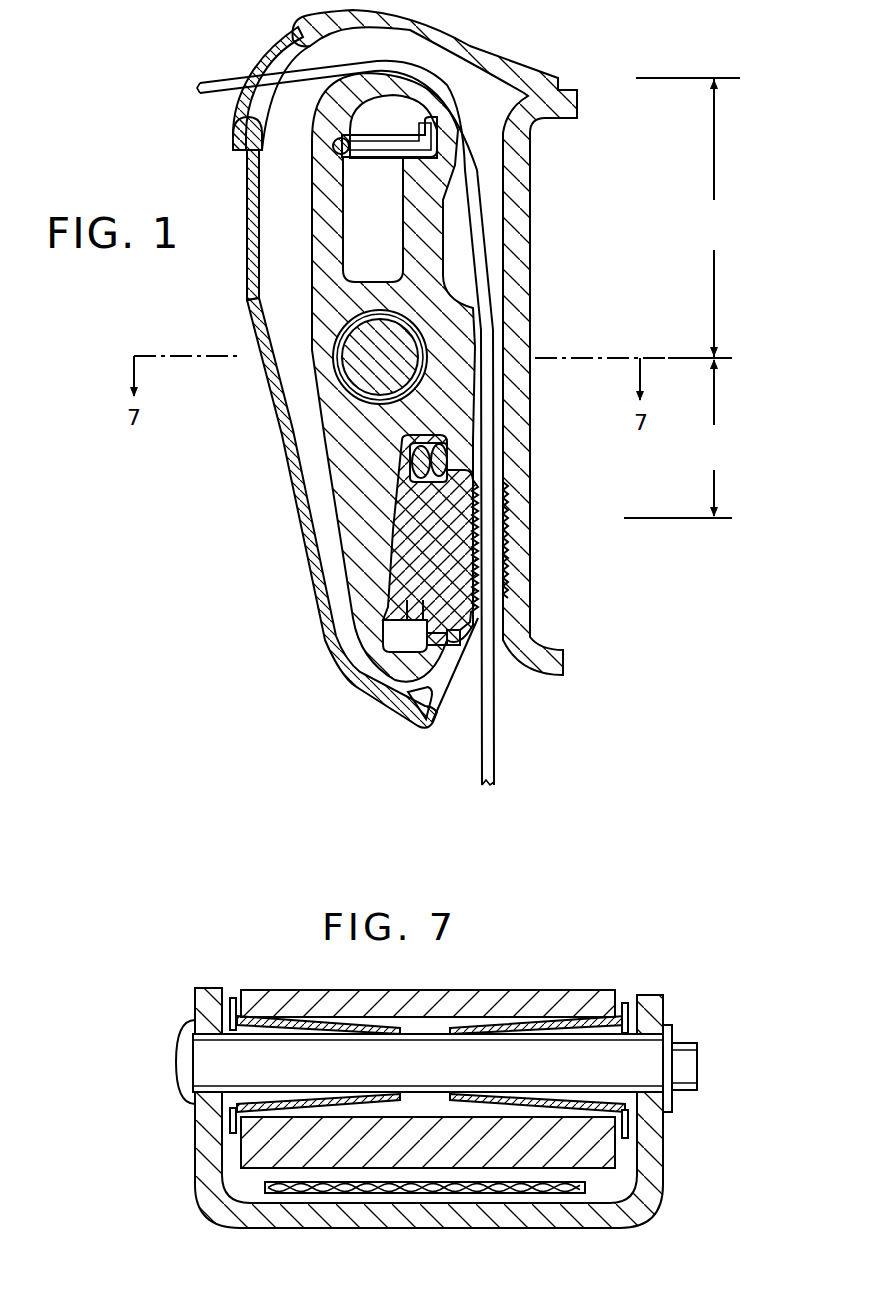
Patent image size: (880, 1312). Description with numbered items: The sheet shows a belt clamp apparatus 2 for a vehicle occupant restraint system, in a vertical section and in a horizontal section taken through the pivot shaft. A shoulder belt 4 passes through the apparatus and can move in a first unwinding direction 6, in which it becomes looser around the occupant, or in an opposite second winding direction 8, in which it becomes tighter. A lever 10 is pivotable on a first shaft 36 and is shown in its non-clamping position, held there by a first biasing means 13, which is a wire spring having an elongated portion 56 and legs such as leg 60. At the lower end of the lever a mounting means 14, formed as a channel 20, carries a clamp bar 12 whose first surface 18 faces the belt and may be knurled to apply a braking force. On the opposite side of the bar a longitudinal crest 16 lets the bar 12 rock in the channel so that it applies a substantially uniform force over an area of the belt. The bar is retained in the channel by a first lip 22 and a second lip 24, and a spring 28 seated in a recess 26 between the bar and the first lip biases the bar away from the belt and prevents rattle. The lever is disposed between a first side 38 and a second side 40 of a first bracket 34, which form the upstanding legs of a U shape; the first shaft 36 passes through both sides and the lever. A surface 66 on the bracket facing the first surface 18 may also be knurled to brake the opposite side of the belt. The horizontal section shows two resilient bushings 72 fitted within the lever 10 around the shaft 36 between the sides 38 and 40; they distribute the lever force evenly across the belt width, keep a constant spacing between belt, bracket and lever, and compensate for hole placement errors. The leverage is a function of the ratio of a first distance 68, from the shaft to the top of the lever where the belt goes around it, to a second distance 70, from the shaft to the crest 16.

In FIG. 1, the belt clamp apparatus 2 is at (213, 688).
In FIG. 1, the shoulder belt 4 is at (215, 92).
In FIG. 7, the shoulder belt 4 is at (511, 1191).
In FIG. 1, the first unwinding direction 6 is at (200, 66).
In FIG. 1, the second winding direction 8 is at (517, 782).
In FIG. 1, the lever 10 is at (312, 262).
In FIG. 7, the lever 10 is at (376, 992).
In FIG. 1, the clamp bar 12 is at (455, 594).
In FIG. 1, the first biasing means 13 is at (228, 169).
In FIG. 1, the mounting means 14 is at (272, 468).
In FIG. 1, the longitudinal crest 16 is at (393, 530).
In FIG. 1, the first surface 18 is at (476, 517).
In FIG. 1, the channel 20 is at (393, 633).
In FIG. 1, the first lip 22 is at (457, 463).
In FIG. 1, the second lip 24 is at (450, 640).
In FIG. 1, the recess 26 is at (428, 481).
In FIG. 1, the spring 28 is at (445, 452).
In FIG. 1, the first bracket 34 is at (528, 290).
In FIG. 7, the first bracket 34 is at (356, 1218).
In FIG. 1, the first shaft 36 is at (355, 347).
In FIG. 7, the first shaft 36 is at (412, 1075).
In FIG. 7, the first side 38 is at (206, 990).
In FIG. 7, the second side 40 is at (650, 994).
In FIG. 1, the elongated portion 56 is at (333, 148).
In FIG. 1, the leg 60 is at (432, 134).
In FIG. 1, the surface 66 is at (503, 546).
In FIG. 1, the first distance 68 is at (688, 218).
In FIG. 1, the second distance 70 is at (678, 438).
In FIG. 7, the resilient bushings 72 is at (233, 998).